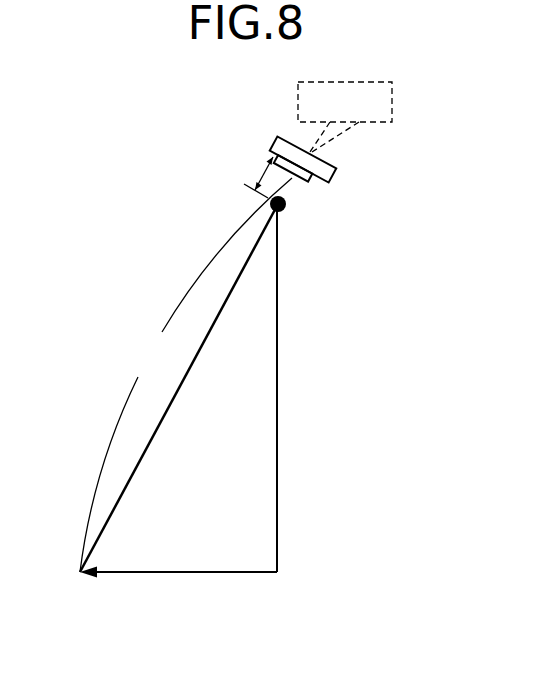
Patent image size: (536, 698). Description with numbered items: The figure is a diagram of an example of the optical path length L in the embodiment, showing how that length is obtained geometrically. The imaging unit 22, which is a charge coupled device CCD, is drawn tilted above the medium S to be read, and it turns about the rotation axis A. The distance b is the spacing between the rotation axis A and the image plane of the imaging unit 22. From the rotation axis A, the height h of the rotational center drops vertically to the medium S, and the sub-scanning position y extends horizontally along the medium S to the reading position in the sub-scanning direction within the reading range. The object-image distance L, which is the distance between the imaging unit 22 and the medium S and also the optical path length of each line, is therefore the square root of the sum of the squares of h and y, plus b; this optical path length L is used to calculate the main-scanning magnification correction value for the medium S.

The imaging unit 22 is at (332, 177).
The rotation axis A is at (285, 206).
The medium to be read S is at (242, 573).
The object-image distance L is at (186, 375).
The height of the rotational center h is at (286, 388).
The sub-scanning position y is at (178, 586).
The distance between the rotation axis and the image plane b is at (257, 175).
The charge coupled device CCD is at (345, 117).